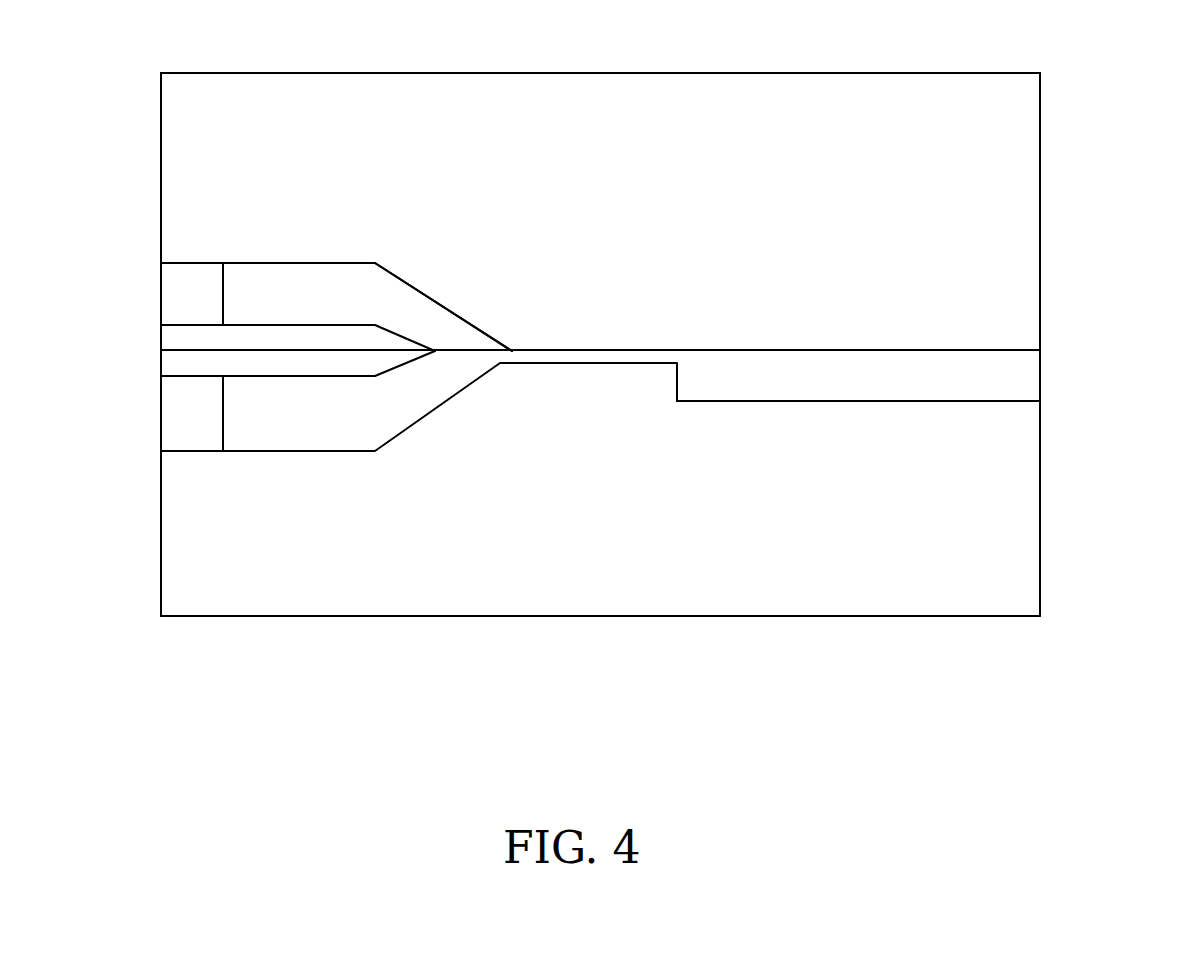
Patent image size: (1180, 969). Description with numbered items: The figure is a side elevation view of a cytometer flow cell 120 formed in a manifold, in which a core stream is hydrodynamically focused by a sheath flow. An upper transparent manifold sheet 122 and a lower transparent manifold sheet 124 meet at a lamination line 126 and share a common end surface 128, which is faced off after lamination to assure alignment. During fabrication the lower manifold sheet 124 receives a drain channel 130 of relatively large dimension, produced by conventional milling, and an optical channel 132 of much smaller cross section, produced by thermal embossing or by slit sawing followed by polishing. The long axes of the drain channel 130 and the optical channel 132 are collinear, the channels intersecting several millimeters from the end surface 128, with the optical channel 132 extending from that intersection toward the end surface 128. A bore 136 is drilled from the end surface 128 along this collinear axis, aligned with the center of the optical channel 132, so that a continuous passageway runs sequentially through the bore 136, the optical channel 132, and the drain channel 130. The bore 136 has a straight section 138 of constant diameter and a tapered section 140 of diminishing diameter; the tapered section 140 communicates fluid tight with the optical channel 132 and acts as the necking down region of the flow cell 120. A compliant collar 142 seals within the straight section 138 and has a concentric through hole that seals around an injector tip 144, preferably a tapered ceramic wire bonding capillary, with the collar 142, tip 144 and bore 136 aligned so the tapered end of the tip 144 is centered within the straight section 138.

The cytometer flow cell 120 is at (600, 401).
The upper transparent manifold sheet 122 is at (1040, 258).
The lower transparent manifold sheet 124 is at (1040, 538).
The lamination line 126 is at (990, 348).
The common end surface 128 is at (160, 122).
The drain channel 130 is at (1000, 388).
The optical channel 132 is at (600, 357).
The bore 136 is at (413, 306).
The straight section 138 is at (338, 267).
The tapered section 140 is at (450, 332).
The compliant collar 142 is at (222, 300).
The injector tip 144 is at (192, 340).